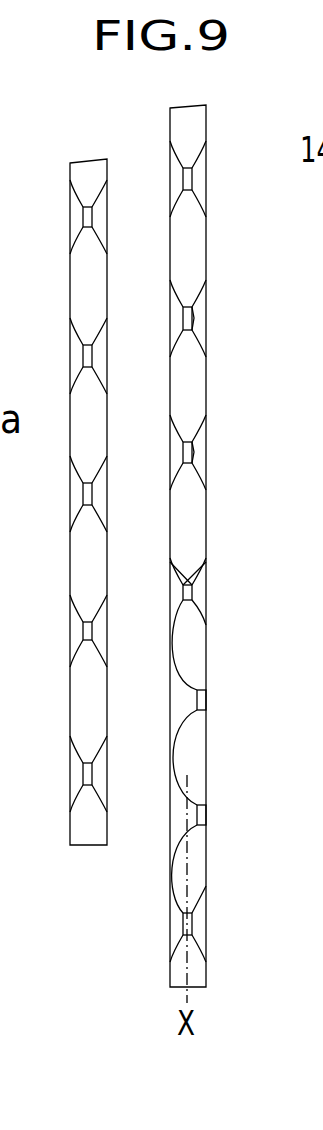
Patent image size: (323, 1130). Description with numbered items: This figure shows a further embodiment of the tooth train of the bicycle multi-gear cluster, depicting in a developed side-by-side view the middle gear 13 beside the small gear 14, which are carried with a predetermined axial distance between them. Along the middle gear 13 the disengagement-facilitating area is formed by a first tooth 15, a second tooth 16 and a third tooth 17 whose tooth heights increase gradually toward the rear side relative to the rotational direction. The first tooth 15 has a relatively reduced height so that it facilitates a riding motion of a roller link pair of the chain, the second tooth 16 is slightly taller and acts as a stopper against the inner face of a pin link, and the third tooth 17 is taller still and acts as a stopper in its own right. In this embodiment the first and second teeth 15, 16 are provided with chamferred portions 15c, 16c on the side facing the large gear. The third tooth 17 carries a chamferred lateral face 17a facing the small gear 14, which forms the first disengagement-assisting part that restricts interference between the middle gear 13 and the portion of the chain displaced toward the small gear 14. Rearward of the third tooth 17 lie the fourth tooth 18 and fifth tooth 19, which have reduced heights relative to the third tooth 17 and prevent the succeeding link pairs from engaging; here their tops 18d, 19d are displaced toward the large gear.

The middle gear 13 is at (216, 121).
The small gear 14 is at (60, 174).
The first tooth 15 is at (178, 313).
The chamferred portion 15c is at (199, 322).
The second tooth 16 is at (178, 452).
The chamferred portion 16c is at (199, 454).
The third tooth 17 is at (197, 591).
The chamferred lateral face 17a is at (182, 566).
The fourth tooth 18 is at (178, 697).
The top of fourth tooth 18d is at (207, 702).
The fifth tooth 19 is at (178, 815).
The top of fifth tooth 19d is at (199, 814).